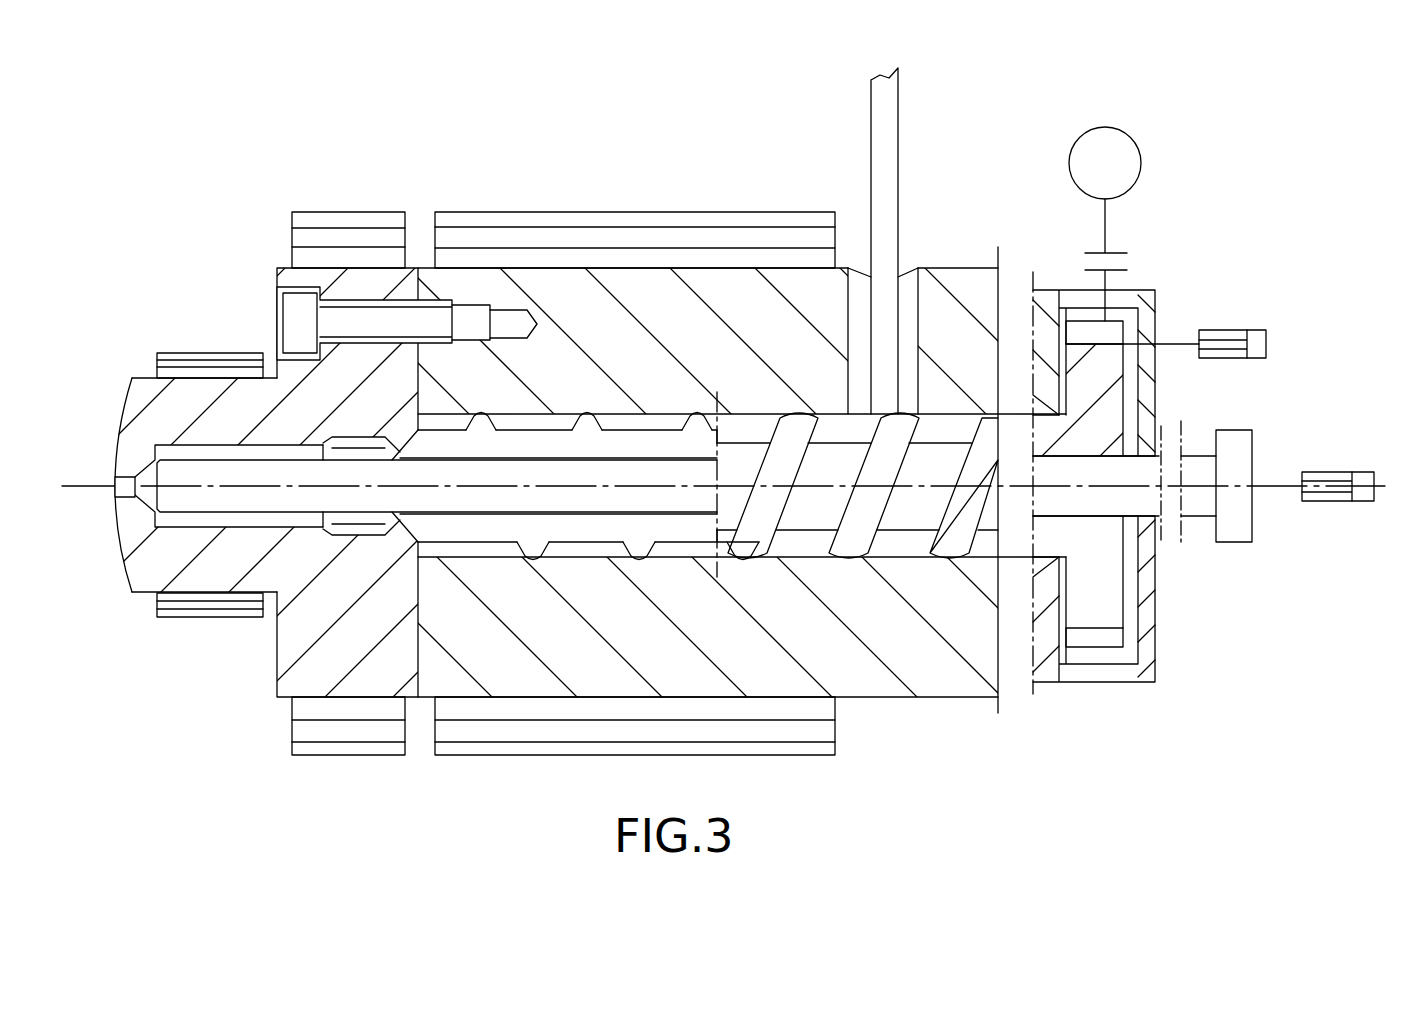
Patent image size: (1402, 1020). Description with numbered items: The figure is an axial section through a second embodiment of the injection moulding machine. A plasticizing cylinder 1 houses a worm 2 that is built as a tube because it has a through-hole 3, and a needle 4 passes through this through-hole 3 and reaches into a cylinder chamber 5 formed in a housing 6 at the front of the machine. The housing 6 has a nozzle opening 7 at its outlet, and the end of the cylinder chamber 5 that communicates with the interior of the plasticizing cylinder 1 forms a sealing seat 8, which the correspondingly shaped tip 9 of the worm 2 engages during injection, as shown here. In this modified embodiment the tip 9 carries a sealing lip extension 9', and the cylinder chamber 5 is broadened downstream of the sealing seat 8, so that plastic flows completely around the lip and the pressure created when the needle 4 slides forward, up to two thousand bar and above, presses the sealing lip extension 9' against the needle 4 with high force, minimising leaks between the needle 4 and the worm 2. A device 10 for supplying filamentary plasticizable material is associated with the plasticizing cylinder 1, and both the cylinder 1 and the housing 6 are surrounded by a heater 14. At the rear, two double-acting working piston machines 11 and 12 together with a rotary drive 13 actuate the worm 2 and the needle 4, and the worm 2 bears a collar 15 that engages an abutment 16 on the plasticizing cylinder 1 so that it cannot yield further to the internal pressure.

The plasticizing cylinder 1 is at (905, 670).
The worm 2 is at (495, 530).
The through-hole 3 is at (600, 530).
The needle 4 is at (655, 475).
The cylinder chamber 5 is at (193, 520).
The housing 6 is at (170, 415).
The nozzle opening 7 is at (113, 477).
The sealing seat 8 is at (380, 437).
The tip 9 is at (370, 629).
The sealing lip extension 9' is at (320, 618).
The device for supplying filamentary plasticizable materials 10 is at (908, 290).
The double-acting working piston machine 11 is at (1252, 327).
The double-acting working piston machine 12 is at (1360, 505).
The rotary drive 13 is at (1142, 157).
The heater 14 is at (317, 210).
The collar 15 is at (1090, 615).
The abutment 16 is at (1125, 615).